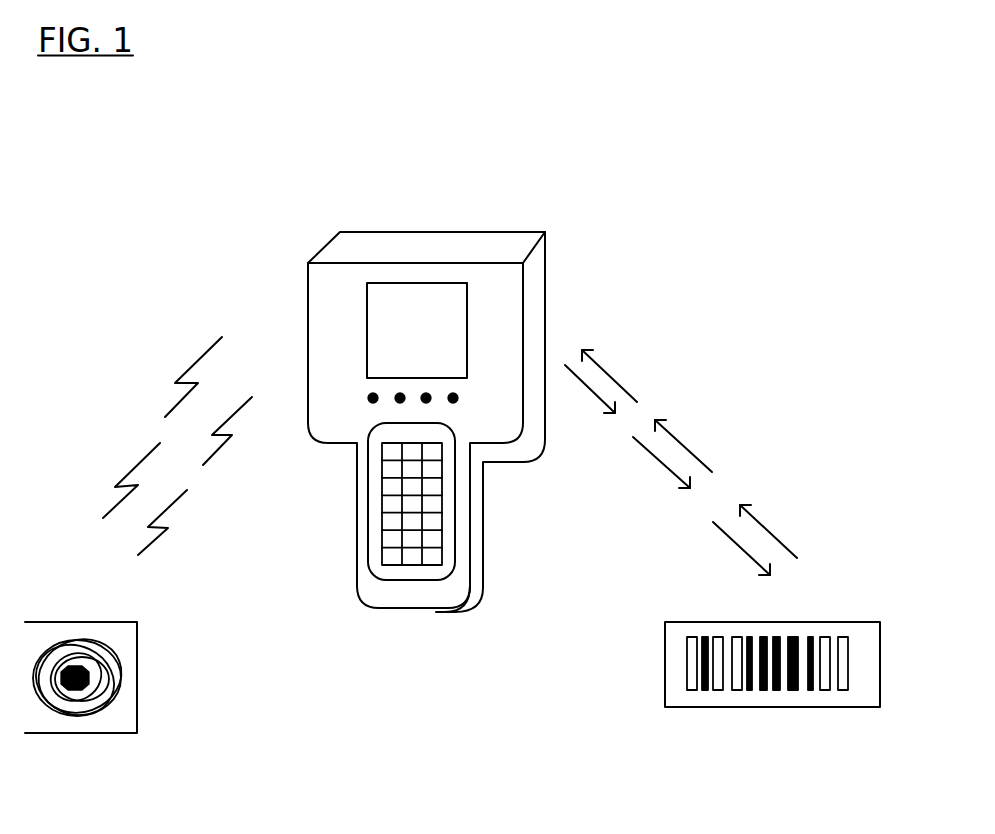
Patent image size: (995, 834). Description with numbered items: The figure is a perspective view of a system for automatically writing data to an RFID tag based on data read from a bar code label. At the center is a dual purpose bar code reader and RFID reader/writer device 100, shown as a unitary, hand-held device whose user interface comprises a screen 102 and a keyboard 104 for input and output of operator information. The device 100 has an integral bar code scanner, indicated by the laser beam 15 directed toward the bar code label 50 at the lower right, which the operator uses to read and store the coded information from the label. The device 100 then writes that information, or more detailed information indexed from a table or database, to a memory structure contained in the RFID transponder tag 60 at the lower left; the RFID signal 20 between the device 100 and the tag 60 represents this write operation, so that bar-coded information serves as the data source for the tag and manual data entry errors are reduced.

The dual purpose bar code reader and RFID reader/writer device 100 is at (426, 404).
The screen 102 is at (404, 338).
The keyboard 104 is at (452, 432).
The RFID signal 20 is at (175, 446).
The laser beam 15 is at (681, 462).
The RFID transponder tag 60 is at (80, 664).
The bar code label 50 is at (772, 651).